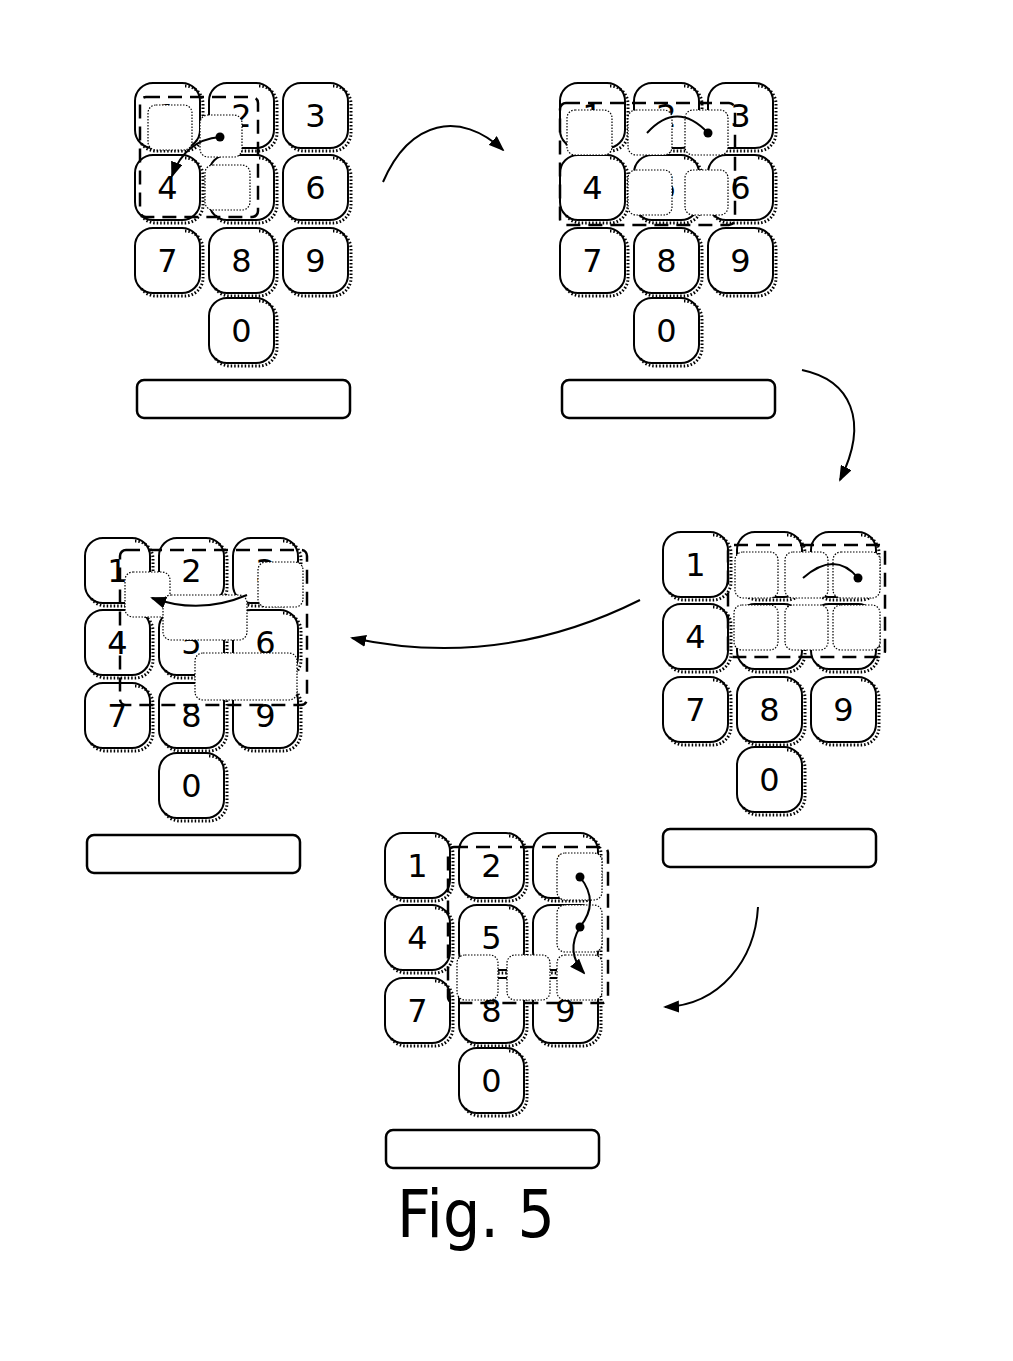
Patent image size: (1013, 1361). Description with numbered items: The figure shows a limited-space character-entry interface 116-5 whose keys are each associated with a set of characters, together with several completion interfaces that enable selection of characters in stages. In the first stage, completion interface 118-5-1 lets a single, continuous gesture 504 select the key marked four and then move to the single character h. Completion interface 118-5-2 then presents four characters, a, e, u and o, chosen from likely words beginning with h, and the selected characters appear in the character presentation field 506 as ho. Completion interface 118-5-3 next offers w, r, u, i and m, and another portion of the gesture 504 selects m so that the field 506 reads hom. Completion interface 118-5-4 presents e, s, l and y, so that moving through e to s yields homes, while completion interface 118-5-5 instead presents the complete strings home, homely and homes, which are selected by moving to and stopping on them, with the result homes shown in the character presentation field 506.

The character-entry interface 116-5 is at (312, 62).
The completion interface, first stage 118-5-1 is at (177, 103).
The completion interface, second stage 118-5-2 is at (608, 102).
The completion interface, third stage 118-5-3 is at (758, 547).
The completion interface, fourth stage 118-5-4 is at (503, 847).
The completion interface, fifth stage 118-5-5 is at (172, 552).
The single, continuous gesture 504 is at (172, 176).
The character presentation field 506 is at (273, 381).